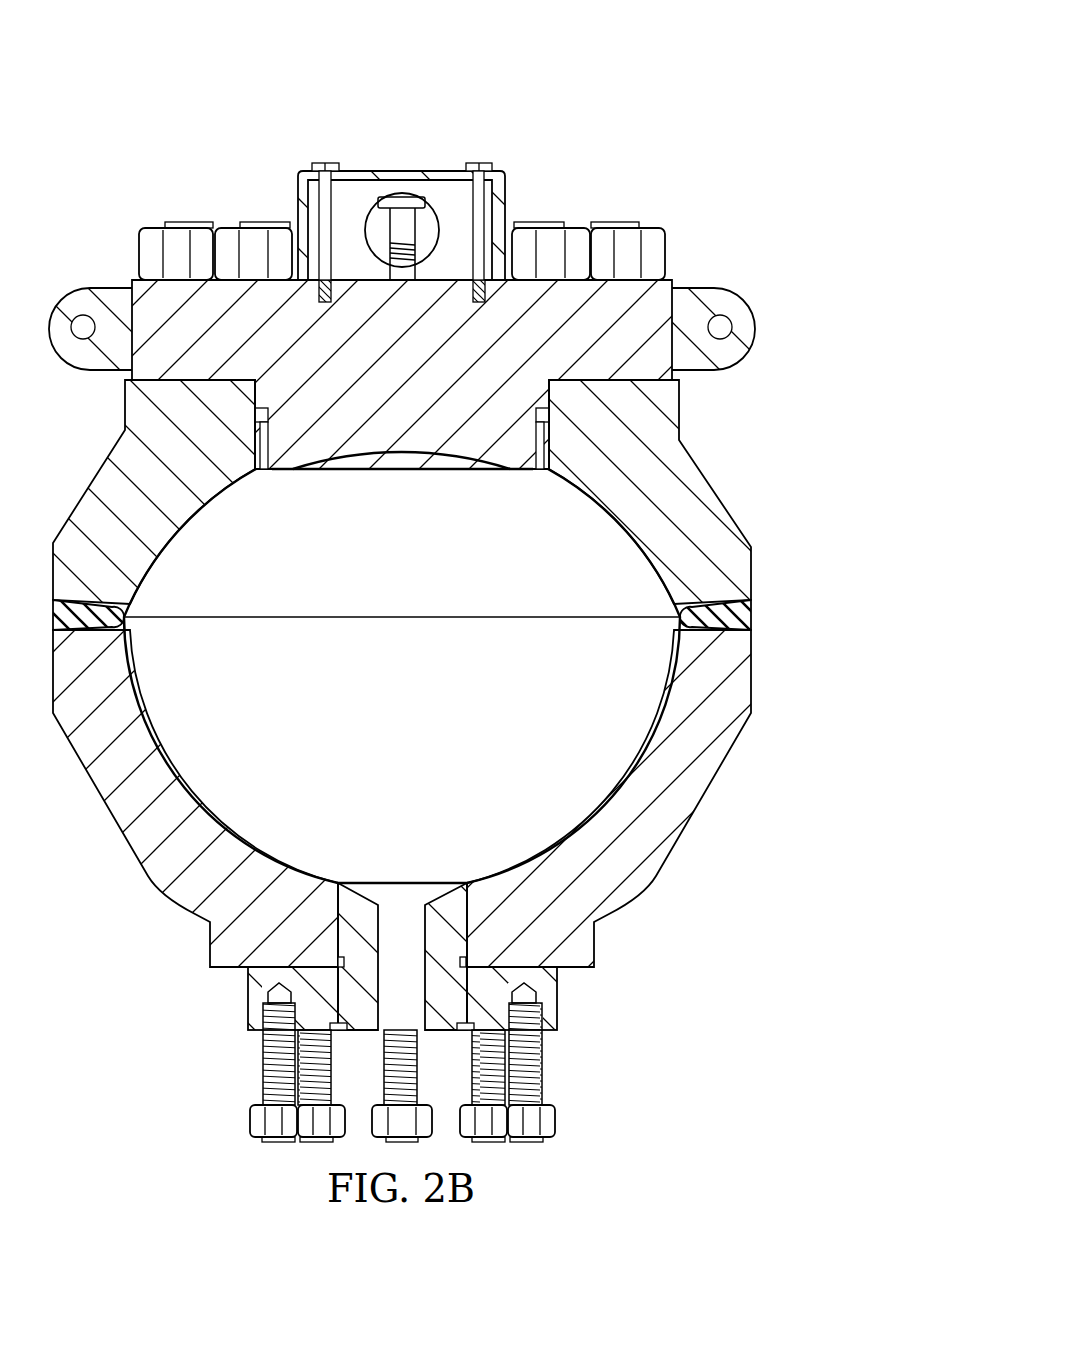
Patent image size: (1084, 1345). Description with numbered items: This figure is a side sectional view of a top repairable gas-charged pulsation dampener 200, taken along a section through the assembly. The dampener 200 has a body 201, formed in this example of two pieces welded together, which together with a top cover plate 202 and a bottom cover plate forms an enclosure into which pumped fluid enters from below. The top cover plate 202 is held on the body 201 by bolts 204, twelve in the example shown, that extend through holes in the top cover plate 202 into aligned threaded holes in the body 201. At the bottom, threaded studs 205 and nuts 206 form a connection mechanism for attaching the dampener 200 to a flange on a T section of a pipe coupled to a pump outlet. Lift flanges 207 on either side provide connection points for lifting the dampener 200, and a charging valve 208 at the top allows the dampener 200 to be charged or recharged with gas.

The top repairable gas-charged pulsation dampener 200 is at (683, 84).
The body 201 is at (744, 568).
The top cover plate 202 is at (425, 440).
The bolts 204 is at (147, 228).
The threaded studs 205 is at (262, 1058).
The nuts 206 is at (250, 1128).
The lift flanges 207 is at (94, 302).
The charging valve 208 is at (433, 208).